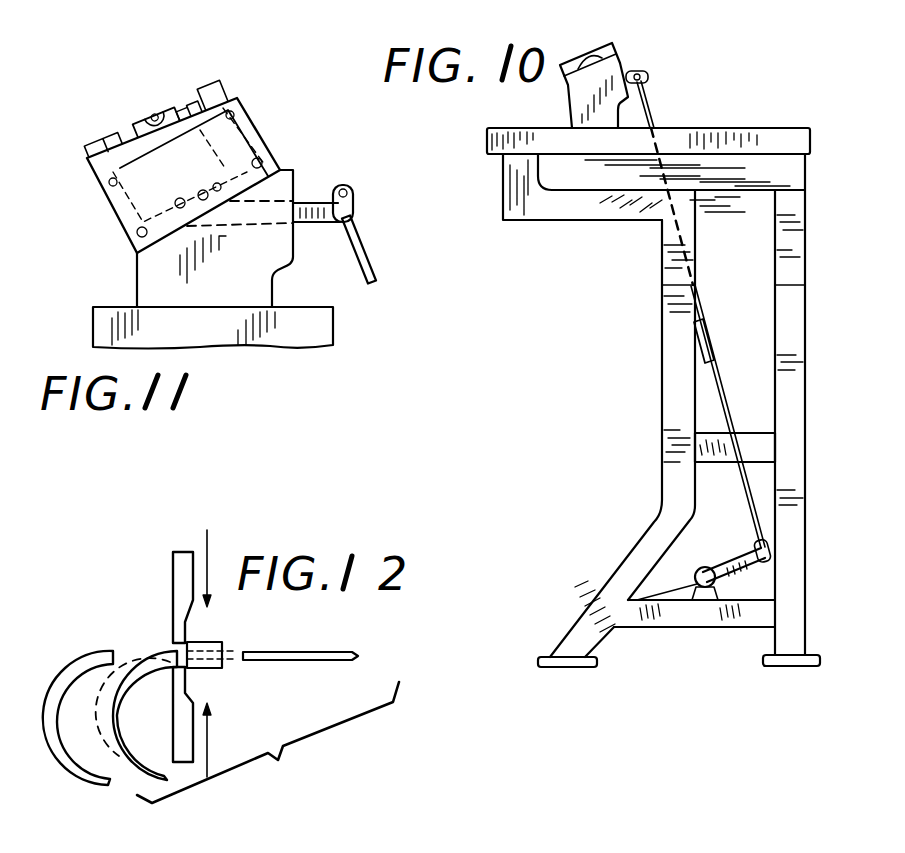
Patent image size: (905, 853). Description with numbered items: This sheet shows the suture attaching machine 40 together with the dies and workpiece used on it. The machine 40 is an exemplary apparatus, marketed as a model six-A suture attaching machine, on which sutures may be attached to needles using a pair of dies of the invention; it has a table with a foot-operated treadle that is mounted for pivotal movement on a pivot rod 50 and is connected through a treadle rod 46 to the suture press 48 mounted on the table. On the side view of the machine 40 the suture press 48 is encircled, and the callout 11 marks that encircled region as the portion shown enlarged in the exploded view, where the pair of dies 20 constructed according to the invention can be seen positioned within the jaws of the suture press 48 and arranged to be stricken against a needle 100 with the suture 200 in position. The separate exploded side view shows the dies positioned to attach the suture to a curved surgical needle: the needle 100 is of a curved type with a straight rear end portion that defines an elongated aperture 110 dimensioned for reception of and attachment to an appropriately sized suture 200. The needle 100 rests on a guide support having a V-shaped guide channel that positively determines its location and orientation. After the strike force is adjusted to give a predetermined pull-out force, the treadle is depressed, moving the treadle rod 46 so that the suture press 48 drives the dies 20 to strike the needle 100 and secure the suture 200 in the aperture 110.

In FIG. 10, the tool post / swaging die holder 11 is at (590, 32).
In FIG. 10, the suture press 48 is at (633, 50).
In FIG. 11, the suture press 48 is at (267, 143).
In FIG. 10, the suture attaching machine 40 is at (752, 126).
In FIG. 10, the treadle rod 46 is at (738, 378).
In FIG. 10, the pivot rod 50 is at (704, 566).
In FIG. 11, the dies 20 is at (157, 126).
In FIG. 12, the needle 100 is at (153, 645).
In FIG. 12, the elongated aperture 110 is at (218, 647).
In FIG. 12, the suture 200 is at (358, 654).